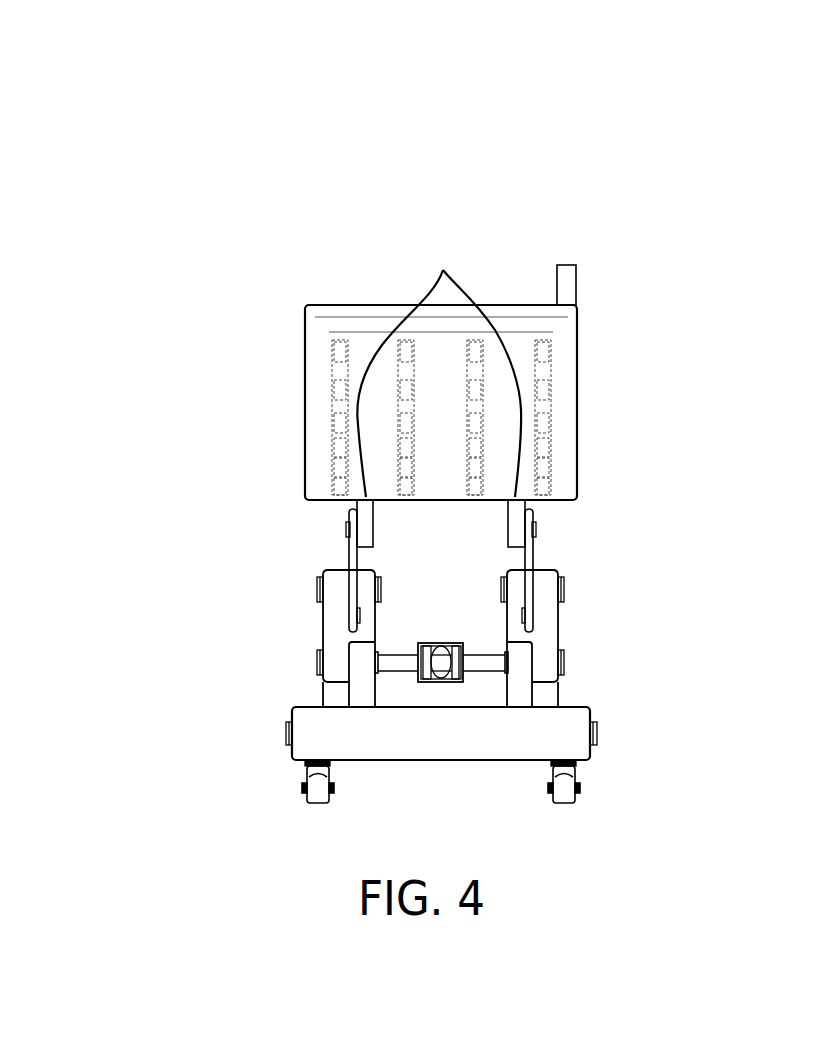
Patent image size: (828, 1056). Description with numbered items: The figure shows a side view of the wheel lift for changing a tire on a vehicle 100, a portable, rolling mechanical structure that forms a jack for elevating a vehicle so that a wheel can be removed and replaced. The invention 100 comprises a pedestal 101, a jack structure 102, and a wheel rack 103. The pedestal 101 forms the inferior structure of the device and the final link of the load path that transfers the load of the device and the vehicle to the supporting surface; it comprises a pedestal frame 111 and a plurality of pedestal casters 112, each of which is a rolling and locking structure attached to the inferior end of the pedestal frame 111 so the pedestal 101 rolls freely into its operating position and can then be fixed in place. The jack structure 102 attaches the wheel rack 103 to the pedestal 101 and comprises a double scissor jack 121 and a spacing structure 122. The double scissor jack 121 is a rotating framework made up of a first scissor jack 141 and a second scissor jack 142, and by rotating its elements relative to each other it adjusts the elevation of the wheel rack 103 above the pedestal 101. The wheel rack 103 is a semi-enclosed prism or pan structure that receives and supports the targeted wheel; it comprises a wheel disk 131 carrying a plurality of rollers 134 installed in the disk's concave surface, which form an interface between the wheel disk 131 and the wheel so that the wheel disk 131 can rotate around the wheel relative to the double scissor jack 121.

The wheel lift for changing tire on a vehicle 100 is at (237, 112).
The pedestal 101 is at (290, 713).
The jack structure 102 is at (167, 652).
The wheel rack 103 is at (277, 283).
The pedestal frame 111 is at (303, 748).
The pedestal casters 112 is at (317, 797).
The double scissor jack 121 is at (441, 388).
The spacing structure 122 is at (446, 648).
The wheel disk 131 is at (577, 345).
The rollers 134 is at (543, 420).
The first scissor jack 141 is at (547, 623).
The second scissor jack 142 is at (330, 630).